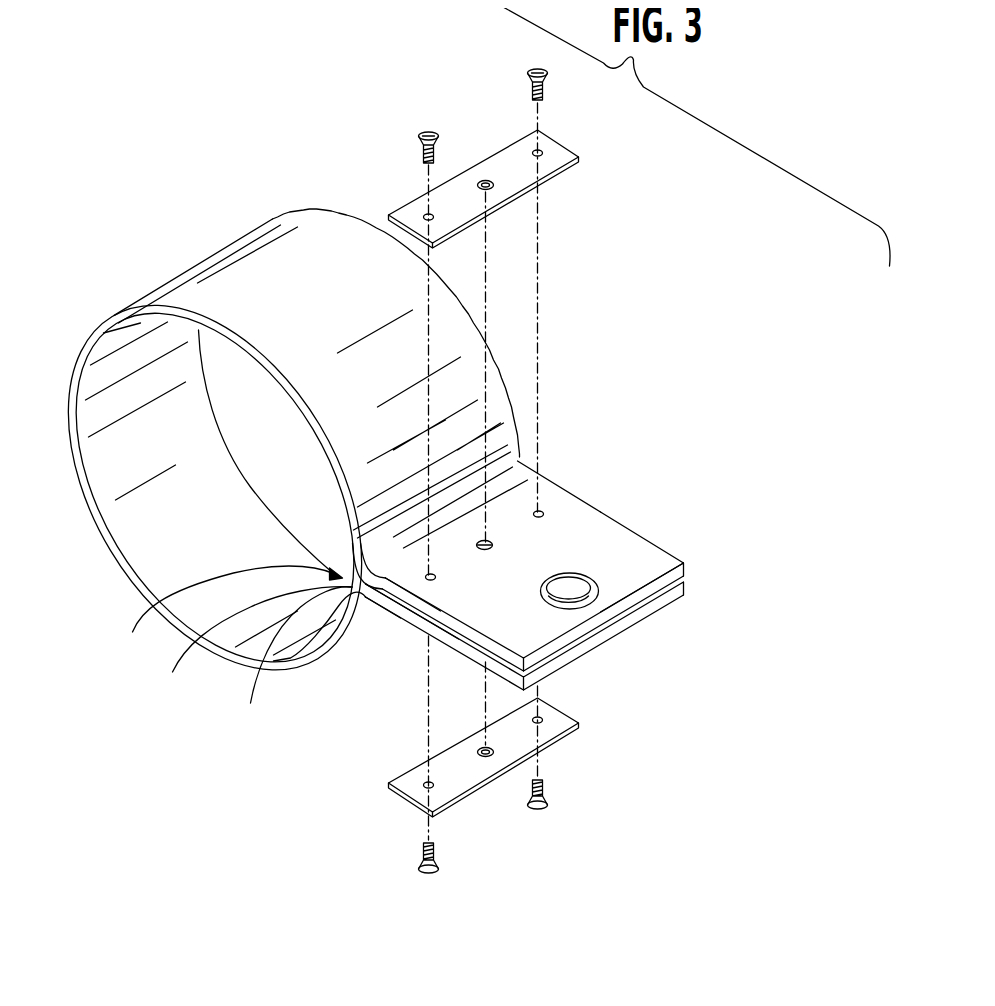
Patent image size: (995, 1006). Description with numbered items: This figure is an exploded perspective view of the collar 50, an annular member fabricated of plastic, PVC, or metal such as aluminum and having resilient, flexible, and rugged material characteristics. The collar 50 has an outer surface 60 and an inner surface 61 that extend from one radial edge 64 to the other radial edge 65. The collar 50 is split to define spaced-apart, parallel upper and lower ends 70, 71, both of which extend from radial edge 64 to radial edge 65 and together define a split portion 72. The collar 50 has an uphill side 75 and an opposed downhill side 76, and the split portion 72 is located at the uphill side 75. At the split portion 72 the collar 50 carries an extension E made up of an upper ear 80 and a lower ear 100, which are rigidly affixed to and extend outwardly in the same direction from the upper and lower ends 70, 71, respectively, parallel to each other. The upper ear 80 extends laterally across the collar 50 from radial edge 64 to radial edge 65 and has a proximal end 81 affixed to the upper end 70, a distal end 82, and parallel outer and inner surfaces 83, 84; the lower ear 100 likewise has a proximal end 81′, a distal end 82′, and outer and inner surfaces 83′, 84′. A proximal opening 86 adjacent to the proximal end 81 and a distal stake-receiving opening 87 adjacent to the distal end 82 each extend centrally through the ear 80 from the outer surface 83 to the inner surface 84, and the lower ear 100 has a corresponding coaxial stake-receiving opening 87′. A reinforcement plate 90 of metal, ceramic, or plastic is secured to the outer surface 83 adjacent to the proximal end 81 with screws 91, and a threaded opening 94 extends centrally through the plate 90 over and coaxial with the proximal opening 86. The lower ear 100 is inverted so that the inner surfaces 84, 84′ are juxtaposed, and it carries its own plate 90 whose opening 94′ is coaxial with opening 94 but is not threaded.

The collar 50 is at (152, 295).
The outer surface 60 is at (297, 287).
The inner surface 61 is at (137, 510).
The radial edge 64 is at (258, 365).
The radial edge 65 is at (333, 213).
The upper end 70 is at (230, 615).
The lower end 71 is at (292, 659).
The split portion 72 is at (254, 645).
The uphill side 75 is at (515, 456).
The downhill side 76 is at (68, 475).
The upper ear 80 is at (658, 563).
The proximal end 81 is at (395, 555).
The proximal end 81′ is at (362, 600).
The distal end 82 is at (598, 617).
The distal end 82′ is at (568, 660).
The outer surface 83 is at (658, 565).
The outer surface 83′ is at (398, 627).
The inner surface 84 is at (457, 642).
The inner surface 84′ is at (436, 611).
The proximal opening 86 is at (488, 543).
The distal stake-receiving opening 87 is at (570, 585).
The stake-receiving opening 87′ is at (571, 600).
The reinforcement plate 90 is at (522, 170).
The screws 91 is at (428, 132).
The threaded opening 94 is at (487, 189).
The opening 94′ is at (489, 758).
The lower ear 100 is at (667, 605).
The extension E is at (600, 502).